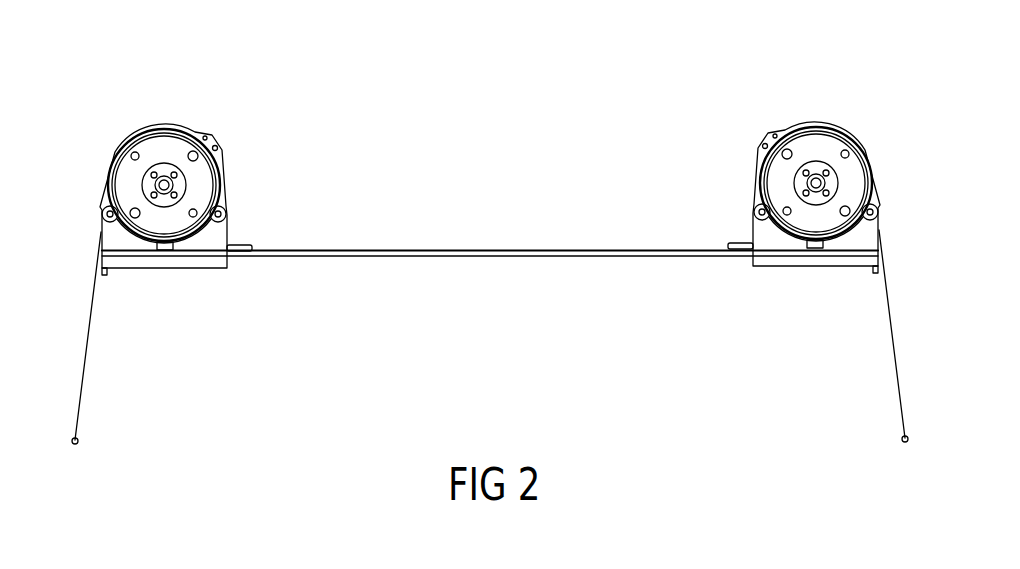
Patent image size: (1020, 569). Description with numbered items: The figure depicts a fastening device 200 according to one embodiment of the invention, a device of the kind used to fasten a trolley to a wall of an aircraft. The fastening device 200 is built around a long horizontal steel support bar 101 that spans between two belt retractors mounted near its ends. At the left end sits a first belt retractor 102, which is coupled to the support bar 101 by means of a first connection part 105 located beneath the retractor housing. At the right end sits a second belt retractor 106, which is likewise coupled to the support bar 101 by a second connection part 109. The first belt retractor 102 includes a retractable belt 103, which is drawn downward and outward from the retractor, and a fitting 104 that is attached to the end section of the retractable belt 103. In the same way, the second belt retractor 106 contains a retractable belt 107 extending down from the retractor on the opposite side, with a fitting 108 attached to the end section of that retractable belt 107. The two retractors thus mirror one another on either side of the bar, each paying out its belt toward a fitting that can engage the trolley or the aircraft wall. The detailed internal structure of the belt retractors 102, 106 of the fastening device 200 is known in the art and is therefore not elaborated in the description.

The fastening device 200 is at (512, 100).
The support bar 101 is at (491, 250).
The first belt retractor 102 is at (162, 150).
The retractable belt 103 is at (85, 357).
The fitting 104 is at (78, 442).
The first connection part 105 is at (163, 250).
The second belt retractor 106 is at (815, 148).
The retractable belt 107 is at (890, 353).
The fitting 108 is at (902, 440).
The second connection part 109 is at (818, 250).